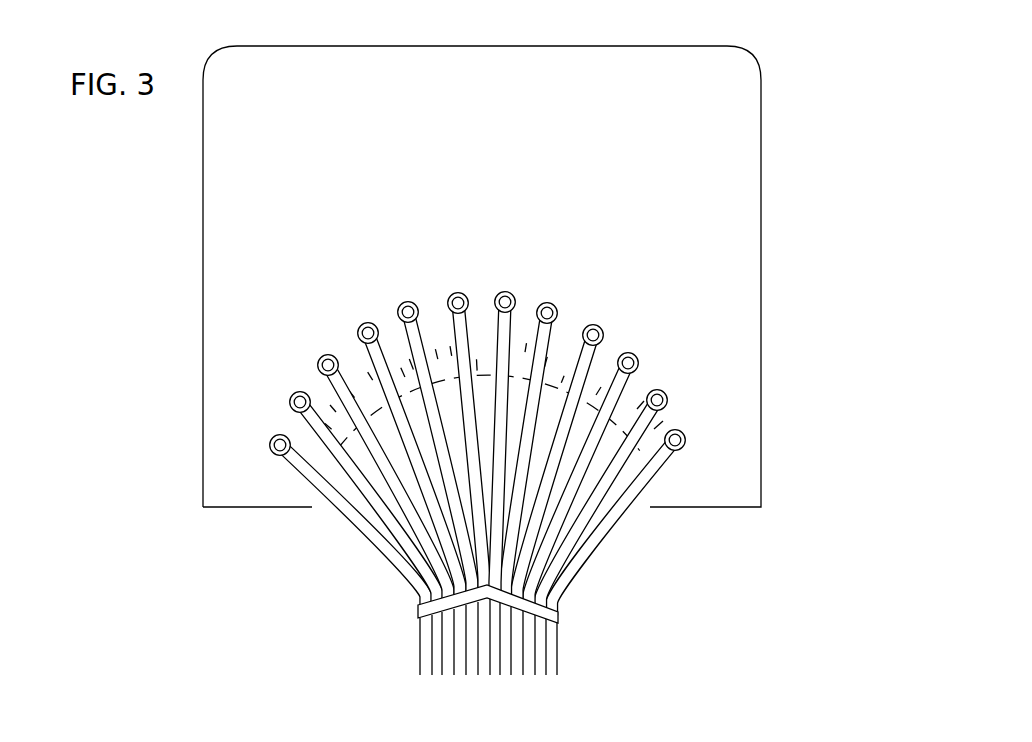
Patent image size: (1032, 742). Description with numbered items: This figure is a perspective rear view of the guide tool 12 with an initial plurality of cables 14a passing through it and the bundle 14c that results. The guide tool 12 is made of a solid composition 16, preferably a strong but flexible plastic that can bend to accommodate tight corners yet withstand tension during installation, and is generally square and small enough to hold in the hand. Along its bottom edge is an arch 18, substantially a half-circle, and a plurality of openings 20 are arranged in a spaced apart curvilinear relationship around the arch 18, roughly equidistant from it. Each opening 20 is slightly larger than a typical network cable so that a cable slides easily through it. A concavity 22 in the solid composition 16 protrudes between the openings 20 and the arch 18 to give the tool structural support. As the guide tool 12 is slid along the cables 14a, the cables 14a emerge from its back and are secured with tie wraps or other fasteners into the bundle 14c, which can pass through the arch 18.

The guide tool 12 is at (782, 110).
The cables 14a is at (583, 487).
The bundle 14c is at (423, 643).
The solid composition 16 is at (337, 105).
The arch 18 is at (518, 377).
The openings 20 is at (665, 400).
The concavity 22 is at (338, 430).